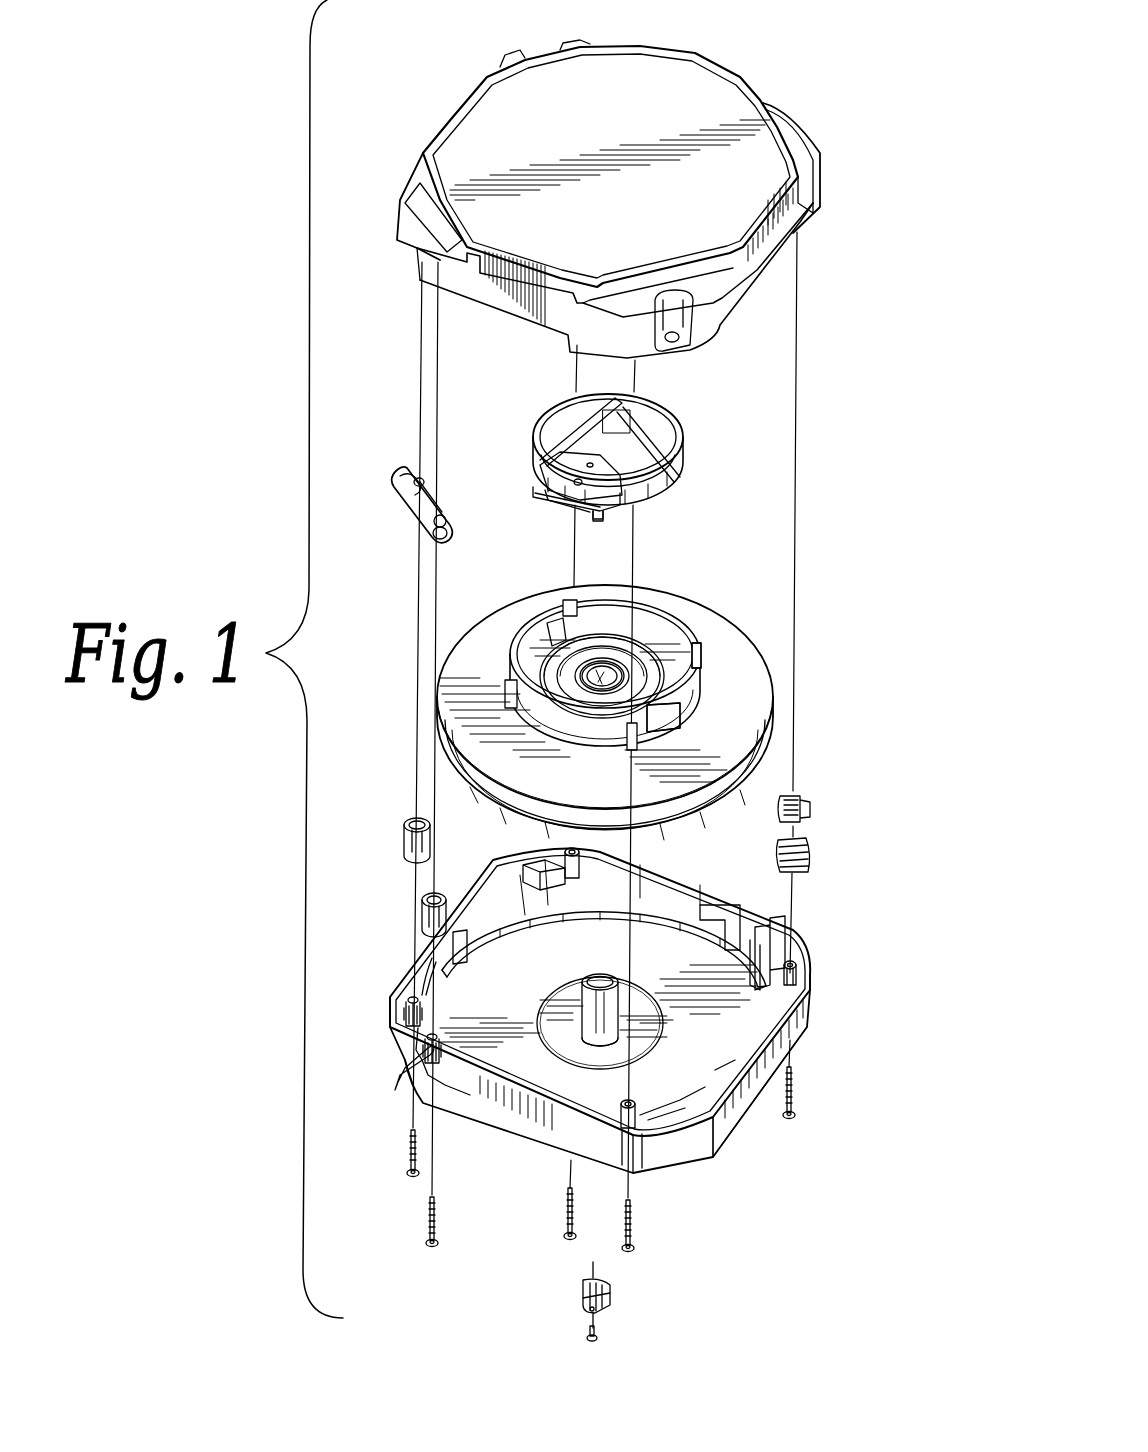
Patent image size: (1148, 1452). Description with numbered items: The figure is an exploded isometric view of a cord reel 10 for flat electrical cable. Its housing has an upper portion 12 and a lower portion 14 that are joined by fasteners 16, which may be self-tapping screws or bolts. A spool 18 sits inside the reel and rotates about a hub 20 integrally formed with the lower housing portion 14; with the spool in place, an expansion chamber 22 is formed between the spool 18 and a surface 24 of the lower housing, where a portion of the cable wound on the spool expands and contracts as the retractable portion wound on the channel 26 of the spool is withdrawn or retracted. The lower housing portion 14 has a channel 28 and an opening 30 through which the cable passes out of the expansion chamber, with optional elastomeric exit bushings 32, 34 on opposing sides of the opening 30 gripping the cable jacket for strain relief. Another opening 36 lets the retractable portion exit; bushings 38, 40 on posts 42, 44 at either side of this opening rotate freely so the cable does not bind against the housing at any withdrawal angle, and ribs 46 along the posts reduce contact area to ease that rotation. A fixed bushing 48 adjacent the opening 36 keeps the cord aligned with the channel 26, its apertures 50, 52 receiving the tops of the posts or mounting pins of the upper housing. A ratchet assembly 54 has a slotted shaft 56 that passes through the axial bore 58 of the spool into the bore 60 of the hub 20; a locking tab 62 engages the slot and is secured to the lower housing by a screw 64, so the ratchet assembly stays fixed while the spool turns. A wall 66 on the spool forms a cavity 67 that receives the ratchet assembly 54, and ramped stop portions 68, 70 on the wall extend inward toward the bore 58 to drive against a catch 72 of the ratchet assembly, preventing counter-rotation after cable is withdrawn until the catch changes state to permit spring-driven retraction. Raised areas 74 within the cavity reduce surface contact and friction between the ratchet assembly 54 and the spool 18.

The cord reel 10 is at (766, 56).
The upper housing portion 12 is at (823, 187).
The lower housing portion 14 is at (812, 1005).
The fasteners 16 is at (412, 1164).
The spool 18 is at (712, 568).
The hub 20 is at (593, 1037).
The expansion chamber 22 is at (700, 1070).
The surface 24 is at (530, 980).
The channel 26 is at (693, 800).
The channel 28 is at (764, 935).
The opening 30 is at (798, 966).
The exit bushing 32 is at (813, 805).
The exit bushing 34 is at (812, 855).
The opening 36 is at (410, 1070).
The bushing 38 is at (408, 848).
The bushing 40 is at (424, 925).
The post 42 is at (398, 1012).
The post 44 is at (430, 1080).
The ribs 46 is at (400, 1047).
The bushing 48 is at (408, 513).
The aperture 50 is at (420, 477).
The aperture 52 is at (450, 513).
The ratchet assembly 54 is at (692, 402).
The shaft 56 is at (594, 519).
The axial bore 58 is at (577, 653).
The bore 60 is at (595, 975).
The locking tab 62 is at (612, 1297).
The screw 64 is at (588, 1335).
The wall 66 is at (680, 653).
The cavity 67 is at (637, 632).
The ramped stop portion 68 is at (670, 710).
The ramped stop portion 70 is at (557, 622).
The catch 72 is at (590, 512).
The raised areas 74 is at (697, 680).